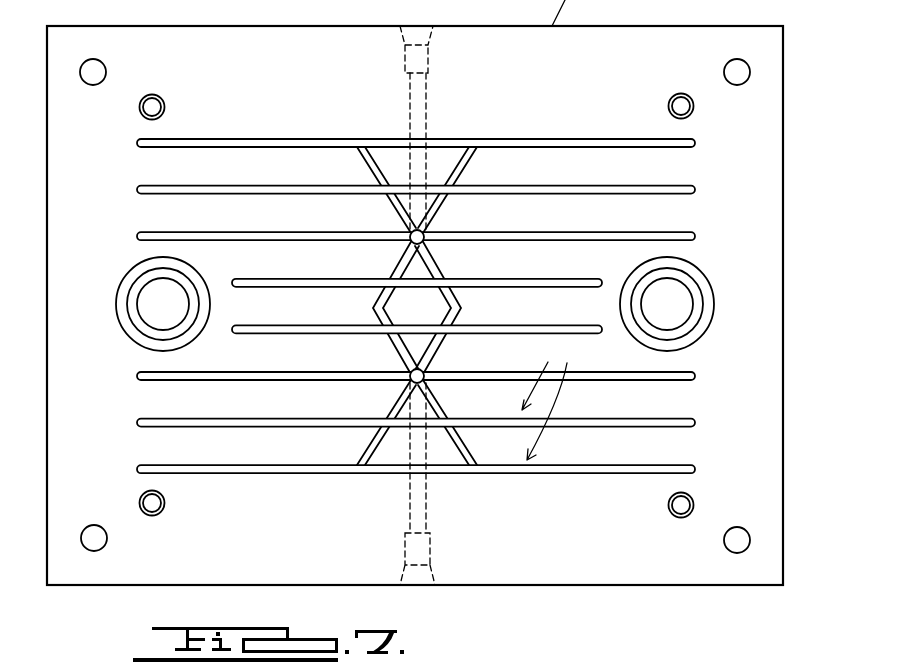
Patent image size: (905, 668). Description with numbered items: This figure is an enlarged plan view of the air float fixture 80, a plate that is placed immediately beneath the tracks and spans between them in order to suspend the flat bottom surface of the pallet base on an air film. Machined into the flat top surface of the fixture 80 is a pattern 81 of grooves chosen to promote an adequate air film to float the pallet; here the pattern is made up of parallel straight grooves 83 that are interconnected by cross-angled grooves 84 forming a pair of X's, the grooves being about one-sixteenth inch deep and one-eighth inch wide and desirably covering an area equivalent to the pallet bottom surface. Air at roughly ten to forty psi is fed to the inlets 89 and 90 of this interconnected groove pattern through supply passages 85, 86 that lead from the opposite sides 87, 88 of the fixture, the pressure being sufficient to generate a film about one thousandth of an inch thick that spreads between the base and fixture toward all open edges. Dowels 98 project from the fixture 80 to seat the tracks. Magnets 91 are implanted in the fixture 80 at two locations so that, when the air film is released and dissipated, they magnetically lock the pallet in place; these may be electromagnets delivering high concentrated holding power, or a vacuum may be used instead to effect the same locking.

The air float fixture 80 is at (789, 42).
The pattern of grooves 81 is at (551, 399).
The parallel straight grooves 83 is at (637, 424).
The cross-angled grooves 84 is at (440, 200).
The supply passage 85 is at (415, 500).
The supply passage 86 is at (417, 97).
The side of the fixture 87 is at (645, 60).
The side of the fixture 88 is at (601, 585).
The inlet 89 is at (426, 377).
The inlet 90 is at (421, 240).
The magnets 91 is at (138, 286).
The dowels 98 is at (696, 503).